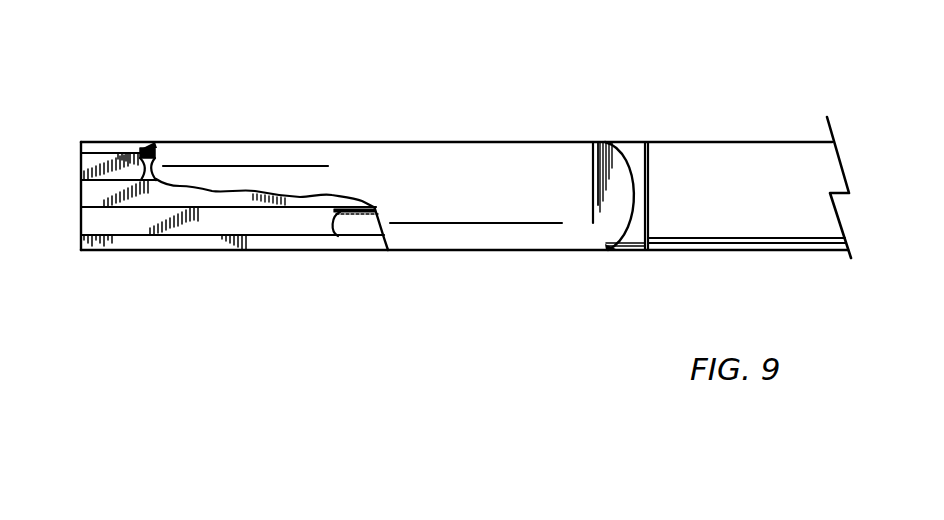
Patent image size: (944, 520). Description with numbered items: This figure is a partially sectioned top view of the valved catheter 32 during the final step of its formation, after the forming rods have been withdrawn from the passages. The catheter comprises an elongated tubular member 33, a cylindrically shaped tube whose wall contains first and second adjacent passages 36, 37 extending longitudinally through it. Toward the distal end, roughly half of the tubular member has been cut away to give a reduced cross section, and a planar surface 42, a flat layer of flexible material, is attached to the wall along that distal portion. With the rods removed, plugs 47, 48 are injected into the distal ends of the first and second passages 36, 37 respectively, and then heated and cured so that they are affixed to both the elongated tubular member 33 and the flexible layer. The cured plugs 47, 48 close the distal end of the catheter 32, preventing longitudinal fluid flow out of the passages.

The valved catheter 32 is at (523, 80).
The elongated tubular member 33 is at (672, 142).
The first passage 36 is at (157, 158).
The second passage 37 is at (357, 227).
The planar surface 42 is at (428, 157).
The plug 47 is at (82, 166).
The plug 48 is at (89, 222).